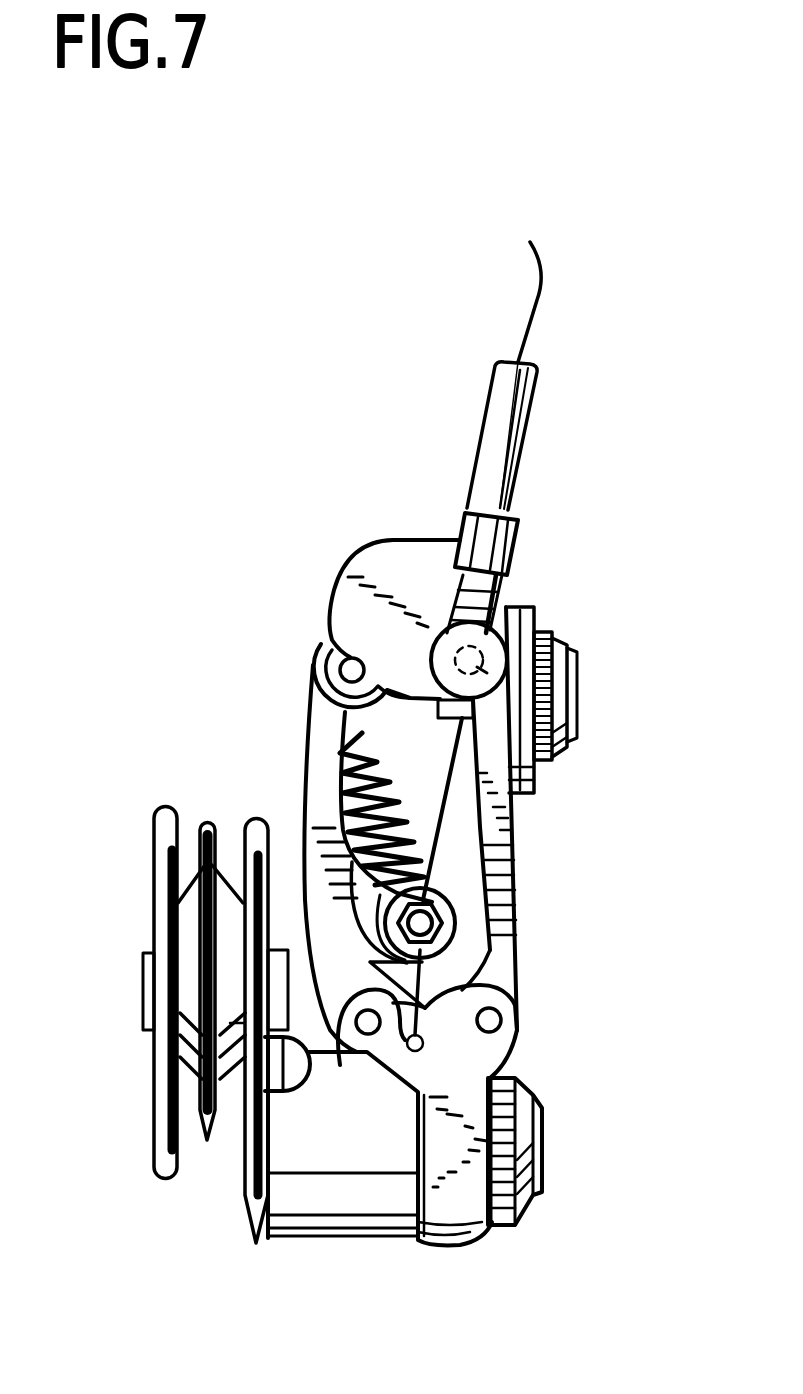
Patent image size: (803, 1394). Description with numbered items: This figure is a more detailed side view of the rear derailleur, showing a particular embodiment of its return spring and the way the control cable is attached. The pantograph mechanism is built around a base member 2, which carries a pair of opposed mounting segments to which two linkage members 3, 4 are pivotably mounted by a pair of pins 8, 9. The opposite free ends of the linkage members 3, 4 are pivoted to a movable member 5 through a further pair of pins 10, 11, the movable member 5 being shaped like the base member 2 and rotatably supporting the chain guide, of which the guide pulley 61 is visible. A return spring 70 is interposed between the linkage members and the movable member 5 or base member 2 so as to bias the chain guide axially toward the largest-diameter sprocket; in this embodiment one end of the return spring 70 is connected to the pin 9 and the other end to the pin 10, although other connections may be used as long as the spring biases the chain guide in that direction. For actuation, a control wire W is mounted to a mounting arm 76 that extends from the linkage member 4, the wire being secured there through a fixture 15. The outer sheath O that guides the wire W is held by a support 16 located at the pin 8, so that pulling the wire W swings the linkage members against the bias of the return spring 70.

The control wire W is at (474, 611).
The outer sheath O is at (530, 413).
The base member 2 is at (378, 568).
The pin 9 is at (331, 647).
The linkage member 4 is at (313, 717).
The return spring 70 is at (340, 750).
The support 16 is at (494, 633).
The linkage member 3 is at (518, 860).
The fixture 15 is at (455, 942).
The pin 8 is at (557, 695).
The pin 10 is at (500, 1025).
The pin 11 is at (367, 1035).
The movable member 5 is at (452, 1202).
The guide pulley 61 is at (203, 1140).
The mounting arm 76 is at (343, 903).